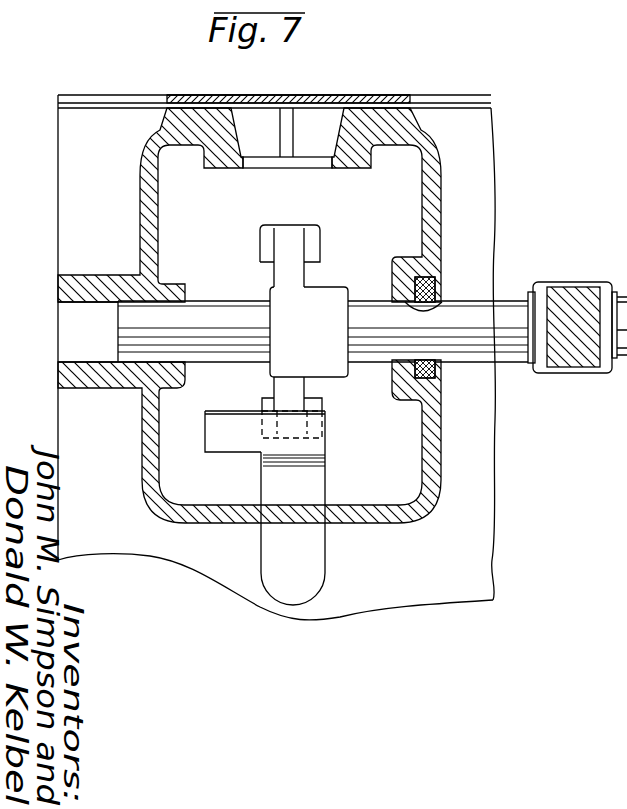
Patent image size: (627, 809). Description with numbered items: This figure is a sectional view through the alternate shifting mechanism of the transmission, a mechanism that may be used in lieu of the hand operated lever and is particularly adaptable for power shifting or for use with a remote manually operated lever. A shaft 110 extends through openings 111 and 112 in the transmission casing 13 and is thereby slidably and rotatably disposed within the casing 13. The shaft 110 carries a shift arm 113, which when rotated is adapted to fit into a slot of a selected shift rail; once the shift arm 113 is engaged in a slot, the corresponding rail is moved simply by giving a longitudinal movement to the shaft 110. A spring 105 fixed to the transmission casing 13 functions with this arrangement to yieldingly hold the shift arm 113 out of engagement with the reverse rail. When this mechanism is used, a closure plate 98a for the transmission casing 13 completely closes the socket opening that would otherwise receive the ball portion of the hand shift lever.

The transmission casing 13 is at (428, 176).
The closure plate 98a is at (367, 95).
The spring 105 is at (270, 473).
The shaft 110 is at (510, 306).
The opening 111 is at (100, 303).
The opening 112 is at (444, 299).
The shift arm 113 is at (283, 270).